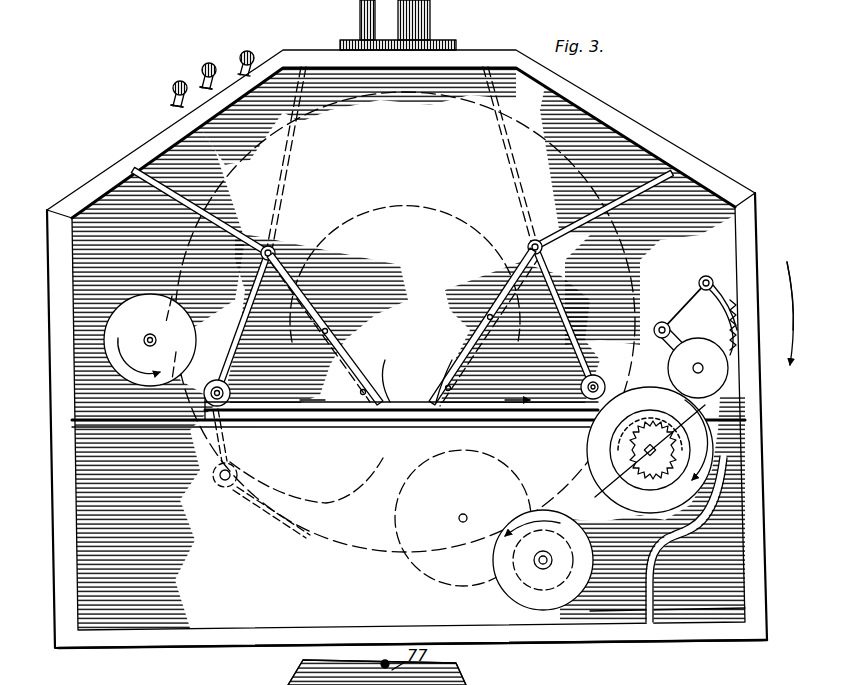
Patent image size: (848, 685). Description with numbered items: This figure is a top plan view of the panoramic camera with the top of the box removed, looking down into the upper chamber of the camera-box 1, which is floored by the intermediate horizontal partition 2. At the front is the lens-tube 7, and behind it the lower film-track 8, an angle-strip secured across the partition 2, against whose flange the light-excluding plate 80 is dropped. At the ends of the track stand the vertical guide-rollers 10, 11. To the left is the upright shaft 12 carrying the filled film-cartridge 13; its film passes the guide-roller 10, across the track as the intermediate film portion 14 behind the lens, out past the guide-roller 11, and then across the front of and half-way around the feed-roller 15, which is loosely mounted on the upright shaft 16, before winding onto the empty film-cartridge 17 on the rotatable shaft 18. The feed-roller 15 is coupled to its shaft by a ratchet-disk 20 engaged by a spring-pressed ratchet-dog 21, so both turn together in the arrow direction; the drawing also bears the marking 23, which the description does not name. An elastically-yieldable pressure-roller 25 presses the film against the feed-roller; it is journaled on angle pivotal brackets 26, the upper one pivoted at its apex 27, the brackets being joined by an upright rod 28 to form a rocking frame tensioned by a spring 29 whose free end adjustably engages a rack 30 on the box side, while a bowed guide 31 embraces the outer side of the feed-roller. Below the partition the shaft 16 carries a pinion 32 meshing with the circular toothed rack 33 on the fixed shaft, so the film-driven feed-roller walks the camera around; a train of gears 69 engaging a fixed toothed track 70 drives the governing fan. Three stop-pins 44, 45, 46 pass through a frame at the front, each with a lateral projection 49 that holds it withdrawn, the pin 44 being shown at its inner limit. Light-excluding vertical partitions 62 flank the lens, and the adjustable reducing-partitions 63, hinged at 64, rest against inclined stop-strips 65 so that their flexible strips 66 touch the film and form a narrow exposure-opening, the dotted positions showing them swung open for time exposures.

The camera-box 1 is at (52, 278).
The intermediate horizontal partition 2 is at (213, 622).
The lens-tube 7 is at (430, 24).
The lower film-track 8 is at (396, 425).
The vertical guide-roller 10 is at (218, 380).
The vertical guide-roller 11 is at (580, 388).
The upright shaft 12 is at (158, 340).
The filled film-cartridge 13 is at (181, 318).
The intermediate film portion 14 is at (413, 401).
The feed-roller 15 is at (598, 494).
The upright shaft 16 is at (640, 470).
The empty film-cartridge 17 is at (530, 600).
The upright rotatable shaft 18 is at (551, 559).
The ratchet-disk 20 is at (600, 449).
The spring-pressed ratchet-dog 21 is at (652, 424).
The belt direction arrow 23 is at (504, 585).
The pressure-roller 25 is at (728, 375).
The angle pivotal brackets 26 is at (690, 300).
The bracket pivot 27 is at (664, 322).
The upright rod 28 is at (708, 276).
The spring 29 is at (722, 320).
The rack 30 is at (745, 328).
The bowed guide 31 is at (686, 540).
The pinion 32 is at (590, 470).
The circular toothed rack 33 is at (221, 178).
The stop-pin 44 is at (251, 52).
The stop-pin 45 is at (210, 63).
The stop-pin 46 is at (174, 86).
The lateral projection 49 is at (200, 82).
The light-excluding vertical partitions 62 is at (262, 246).
The adjustable reducing-partitions 63 is at (296, 185).
The partition hinge 64 is at (278, 250).
The stop-strip 65 is at (343, 362).
The flexible strips 66 is at (388, 383).
The train of gears 69 is at (331, 500).
The fixed toothed track 70 is at (404, 210).
The light-excluding plate 80 is at (75, 428).